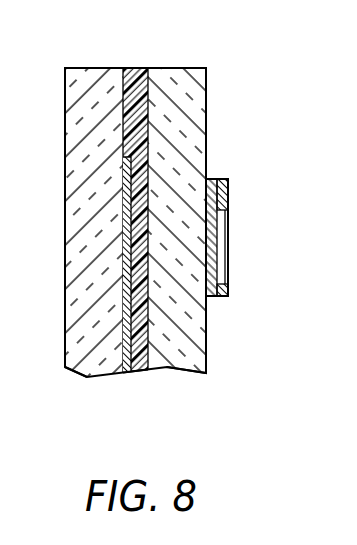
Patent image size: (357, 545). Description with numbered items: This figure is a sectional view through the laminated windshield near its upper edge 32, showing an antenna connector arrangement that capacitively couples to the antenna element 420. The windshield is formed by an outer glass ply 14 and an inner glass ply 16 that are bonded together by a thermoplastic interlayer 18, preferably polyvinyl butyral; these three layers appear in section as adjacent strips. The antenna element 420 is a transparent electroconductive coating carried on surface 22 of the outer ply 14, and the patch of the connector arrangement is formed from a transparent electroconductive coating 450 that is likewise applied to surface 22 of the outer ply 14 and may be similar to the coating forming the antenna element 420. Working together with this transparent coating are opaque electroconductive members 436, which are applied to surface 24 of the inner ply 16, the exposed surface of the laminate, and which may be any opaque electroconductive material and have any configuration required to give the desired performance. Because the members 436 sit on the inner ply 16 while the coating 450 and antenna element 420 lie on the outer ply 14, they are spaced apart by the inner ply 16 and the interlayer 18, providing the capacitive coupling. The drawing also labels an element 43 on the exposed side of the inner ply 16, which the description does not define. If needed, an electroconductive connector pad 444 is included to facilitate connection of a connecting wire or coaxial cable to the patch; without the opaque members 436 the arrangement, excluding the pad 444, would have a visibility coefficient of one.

The upper edge 32 is at (100, 68).
The surface 22 is at (124, 126).
The antenna element 420 is at (128, 240).
The transparent electroconductive coating 450 is at (212, 178).
The electroconductive connector pad 444 is at (222, 178).
The side member 43 is at (243, 220).
The opaque electroconductive members 436 is at (222, 297).
The surface 24 is at (208, 352).
The outer glass ply 14 is at (87, 378).
The thermoplastic interlayer 18 is at (137, 372).
The inner glass ply 16 is at (181, 371).